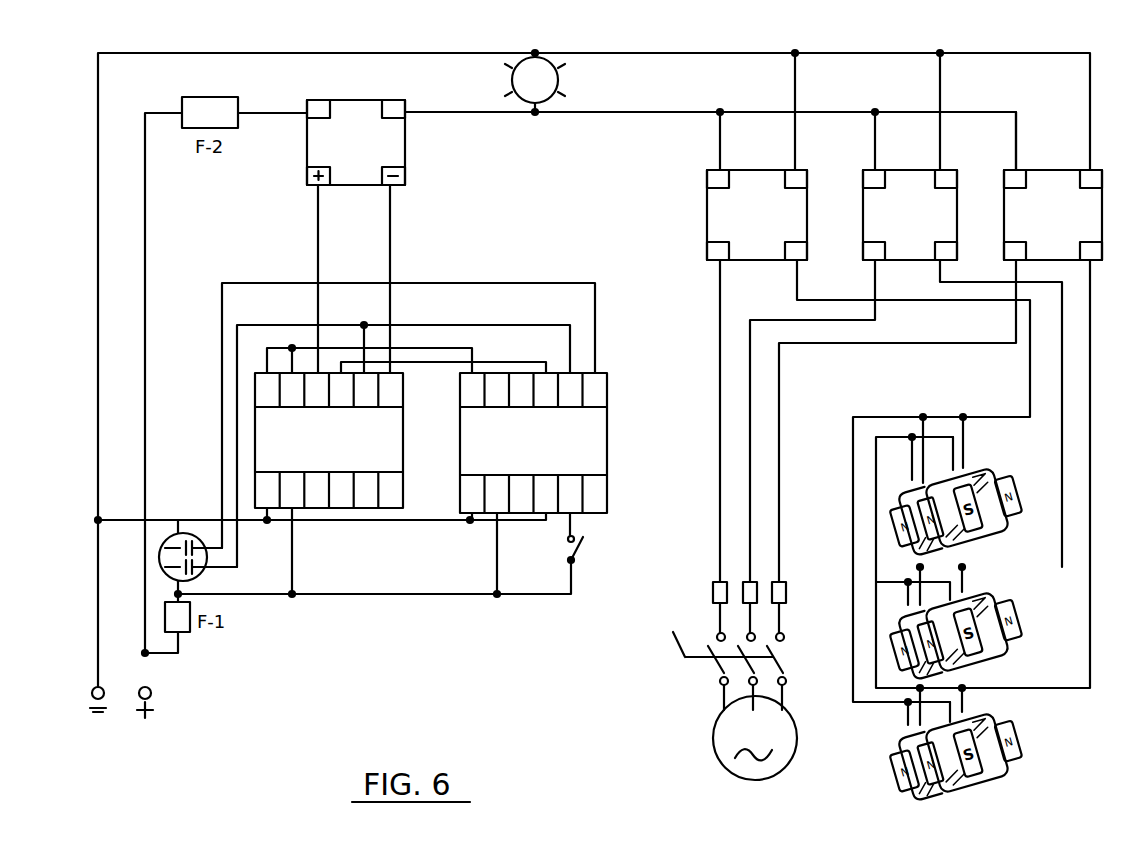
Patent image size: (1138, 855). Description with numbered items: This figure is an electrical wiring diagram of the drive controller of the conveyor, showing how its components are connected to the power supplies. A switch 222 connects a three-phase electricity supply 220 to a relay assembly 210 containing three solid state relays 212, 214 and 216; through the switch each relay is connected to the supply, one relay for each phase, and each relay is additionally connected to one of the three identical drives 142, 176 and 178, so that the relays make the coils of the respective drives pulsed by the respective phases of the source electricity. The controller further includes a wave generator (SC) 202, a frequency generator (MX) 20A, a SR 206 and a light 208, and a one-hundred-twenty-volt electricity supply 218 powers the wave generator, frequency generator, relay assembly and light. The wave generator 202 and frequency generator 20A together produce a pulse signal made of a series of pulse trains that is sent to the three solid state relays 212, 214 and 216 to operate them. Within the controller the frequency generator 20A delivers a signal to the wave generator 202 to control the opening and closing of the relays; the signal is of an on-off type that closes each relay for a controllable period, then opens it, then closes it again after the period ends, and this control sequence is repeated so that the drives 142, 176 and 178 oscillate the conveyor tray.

The first drive 142 is at (990, 455).
The second drive 176 is at (1002, 596).
The third drive 178 is at (1020, 718).
The wave generator 202 is at (340, 463).
The frequency generator 20A is at (596, 448).
The SR 206 is at (385, 140).
The light 208 is at (506, 80).
The relay assembly 210 is at (846, 190).
The solid state relay 212 is at (748, 180).
The solid state relay 214 is at (897, 178).
The solid state relay 216 is at (1053, 180).
The 120-volt electricity supply 218 is at (154, 710).
The three-phase electricity supply 220 is at (722, 745).
The switch 222 is at (698, 669).